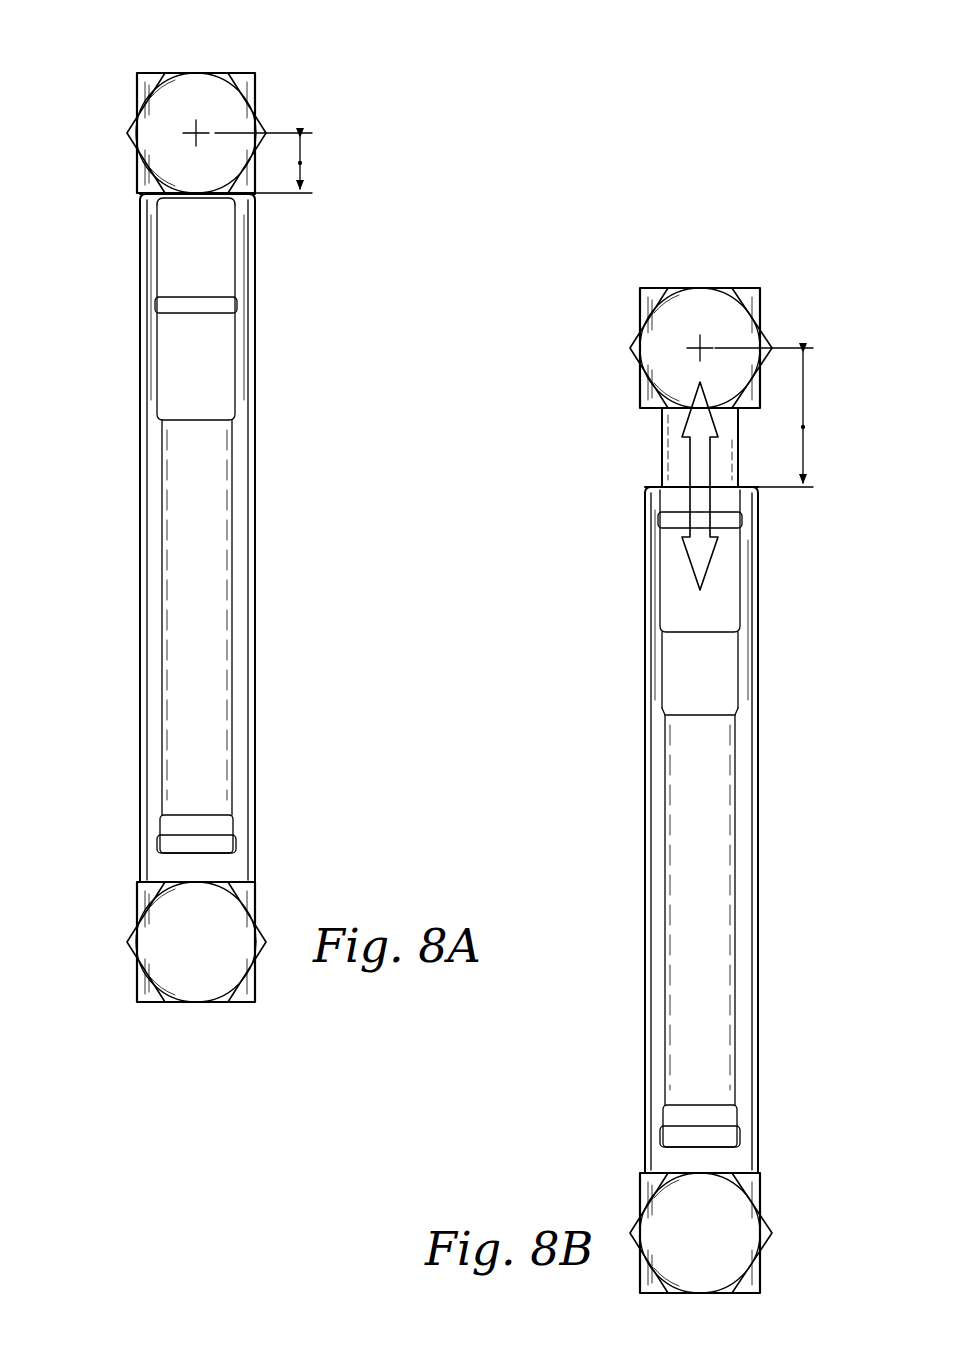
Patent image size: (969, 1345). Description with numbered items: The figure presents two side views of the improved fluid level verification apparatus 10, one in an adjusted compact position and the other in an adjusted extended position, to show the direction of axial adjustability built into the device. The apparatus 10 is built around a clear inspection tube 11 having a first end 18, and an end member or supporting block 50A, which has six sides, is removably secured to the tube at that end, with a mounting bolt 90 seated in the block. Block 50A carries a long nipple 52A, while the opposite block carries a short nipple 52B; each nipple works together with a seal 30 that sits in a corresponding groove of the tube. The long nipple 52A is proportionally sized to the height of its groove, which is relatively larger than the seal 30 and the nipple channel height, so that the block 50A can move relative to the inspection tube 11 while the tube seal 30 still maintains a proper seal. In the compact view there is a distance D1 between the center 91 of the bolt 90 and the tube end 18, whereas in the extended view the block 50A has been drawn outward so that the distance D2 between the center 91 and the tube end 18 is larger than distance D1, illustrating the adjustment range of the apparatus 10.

In FIG. 8A, the fluid level verification apparatus 10 is at (120, 397).
In FIG. 8B, the fluid level verification apparatus 10 is at (596, 800).
In FIG. 8A, the clear inspection tube 11 is at (256, 590).
In FIG. 8B, the clear inspection tube 11 is at (758, 865).
In FIG. 8A, the first end 18 is at (138, 197).
In FIG. 8B, the first end 18 is at (663, 487).
In FIG. 8A, the seal 30 is at (222, 300).
In FIG. 8B, the seal 30 is at (725, 513).
In FIG. 8A, the supporting block 50A is at (160, 105).
In FIG. 8A, the long nipple 52A is at (222, 377).
In FIG. 8B, the long nipple 52A is at (725, 592).
In FIG. 8A, the short nipple 52B is at (208, 815).
In FIG. 8B, the short nipple 52B is at (710, 1105).
In FIG. 8A, the mounting bolt 90 is at (222, 96).
In FIG. 8B, the mounting bolt 90 is at (725, 312).
In FIG. 8A, the center of bolt 91 is at (196, 133).
In FIG. 8B, the center of bolt 91 is at (700, 348).
In FIG. 8A, the distance D1 is at (300, 163).
In FIG. 8B, the distance D2 is at (803, 427).